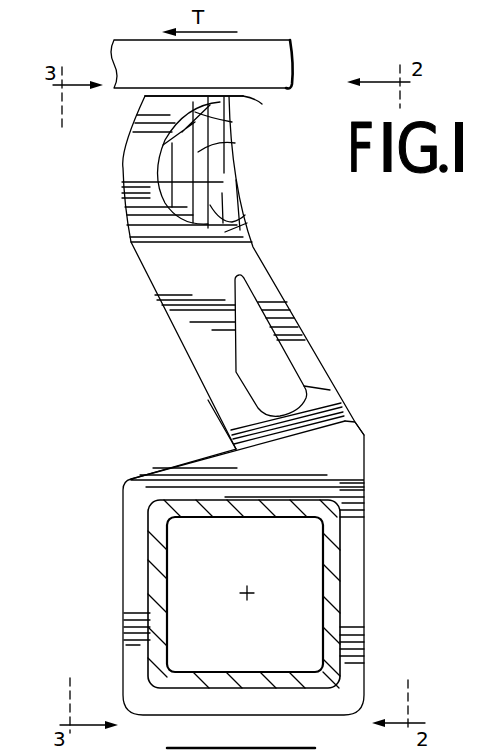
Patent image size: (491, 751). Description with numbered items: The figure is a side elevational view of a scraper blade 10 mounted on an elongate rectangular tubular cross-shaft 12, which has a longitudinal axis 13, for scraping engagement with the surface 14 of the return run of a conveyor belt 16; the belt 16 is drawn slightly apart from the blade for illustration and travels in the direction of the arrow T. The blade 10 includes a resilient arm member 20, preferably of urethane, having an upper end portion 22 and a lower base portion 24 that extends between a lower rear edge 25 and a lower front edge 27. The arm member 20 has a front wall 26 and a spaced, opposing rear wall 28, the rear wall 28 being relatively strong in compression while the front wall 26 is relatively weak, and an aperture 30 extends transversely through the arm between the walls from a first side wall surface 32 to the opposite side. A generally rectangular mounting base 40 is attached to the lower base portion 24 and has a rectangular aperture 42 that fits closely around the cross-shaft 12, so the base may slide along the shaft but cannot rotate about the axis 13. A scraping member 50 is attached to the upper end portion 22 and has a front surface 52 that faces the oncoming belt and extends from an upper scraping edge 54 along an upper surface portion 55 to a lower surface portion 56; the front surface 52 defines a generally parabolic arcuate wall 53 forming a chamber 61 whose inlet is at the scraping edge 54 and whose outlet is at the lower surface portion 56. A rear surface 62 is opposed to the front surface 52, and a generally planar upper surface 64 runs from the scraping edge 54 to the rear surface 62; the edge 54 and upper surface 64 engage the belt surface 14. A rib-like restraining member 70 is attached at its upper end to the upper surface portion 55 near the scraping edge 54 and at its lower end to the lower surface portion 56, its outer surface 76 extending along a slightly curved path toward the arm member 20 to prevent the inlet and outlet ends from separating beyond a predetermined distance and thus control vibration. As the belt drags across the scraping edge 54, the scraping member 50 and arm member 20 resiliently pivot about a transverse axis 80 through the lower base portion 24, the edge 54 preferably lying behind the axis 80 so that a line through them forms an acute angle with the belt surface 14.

The scraper blade 10 is at (335, 302).
The cross-shaft 12 is at (163, 560).
The longitudinal axis 13 is at (250, 596).
The surface 14 is at (292, 88).
The conveyor belt 16 is at (306, 49).
The arm member 20 is at (290, 278).
The upper end portion 22 is at (242, 258).
The lower base portion 24 is at (328, 392).
The lower rear edge 25 is at (234, 445).
The front wall 26 is at (300, 347).
The lower front edge 27 is at (345, 415).
The rear wall 28 is at (208, 402).
The aperture 30 is at (250, 347).
The first side wall surface 32 is at (165, 258).
The mounting base 40 is at (380, 612).
The rectangular aperture 42 is at (341, 570).
The scraping member 50 is at (112, 170).
The front surface 52 is at (195, 150).
The arcuate wall 53 is at (235, 143).
The scraping edge 54 is at (262, 104).
The upper surface portion 55 is at (232, 122).
The lower surface portion 56 is at (247, 223).
The chamber 61 is at (232, 222).
The rear surface 62 is at (127, 137).
The upper surface 64 is at (186, 95).
The restraining member 70 is at (250, 186).
The outer surface 76 is at (235, 204).
The axis 80 is at (292, 423).